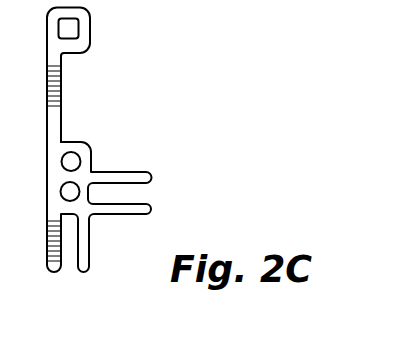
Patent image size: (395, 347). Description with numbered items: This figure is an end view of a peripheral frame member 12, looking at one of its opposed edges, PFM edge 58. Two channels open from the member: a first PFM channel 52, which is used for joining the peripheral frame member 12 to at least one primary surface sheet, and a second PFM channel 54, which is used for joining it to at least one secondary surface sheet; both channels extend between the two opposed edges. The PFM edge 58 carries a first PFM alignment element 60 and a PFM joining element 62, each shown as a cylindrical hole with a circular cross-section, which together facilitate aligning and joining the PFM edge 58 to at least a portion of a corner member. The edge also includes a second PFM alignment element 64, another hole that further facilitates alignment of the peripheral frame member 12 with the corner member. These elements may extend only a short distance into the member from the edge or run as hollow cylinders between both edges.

The peripheral frame member 12 is at (126, 155).
The first PFM channel 52 is at (148, 190).
The second PFM channel 54 is at (72, 274).
The PFM edge 58 is at (61, 110).
The first PFM alignment element 60 is at (70, 152).
The PFM joining element 62 is at (72, 194).
The second PFM alignment element 64 is at (73, 30).